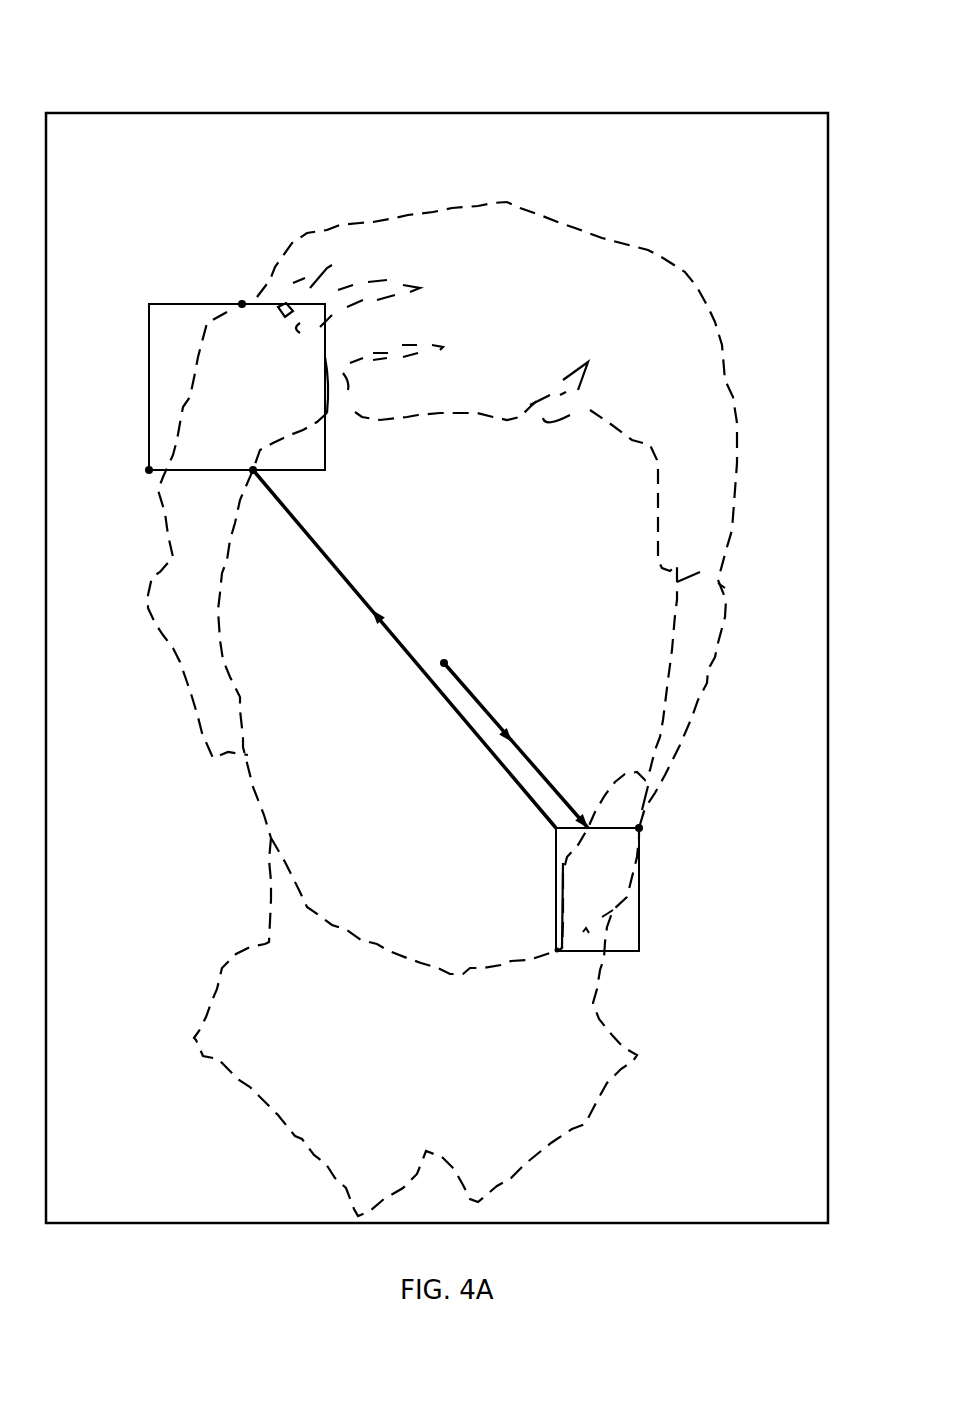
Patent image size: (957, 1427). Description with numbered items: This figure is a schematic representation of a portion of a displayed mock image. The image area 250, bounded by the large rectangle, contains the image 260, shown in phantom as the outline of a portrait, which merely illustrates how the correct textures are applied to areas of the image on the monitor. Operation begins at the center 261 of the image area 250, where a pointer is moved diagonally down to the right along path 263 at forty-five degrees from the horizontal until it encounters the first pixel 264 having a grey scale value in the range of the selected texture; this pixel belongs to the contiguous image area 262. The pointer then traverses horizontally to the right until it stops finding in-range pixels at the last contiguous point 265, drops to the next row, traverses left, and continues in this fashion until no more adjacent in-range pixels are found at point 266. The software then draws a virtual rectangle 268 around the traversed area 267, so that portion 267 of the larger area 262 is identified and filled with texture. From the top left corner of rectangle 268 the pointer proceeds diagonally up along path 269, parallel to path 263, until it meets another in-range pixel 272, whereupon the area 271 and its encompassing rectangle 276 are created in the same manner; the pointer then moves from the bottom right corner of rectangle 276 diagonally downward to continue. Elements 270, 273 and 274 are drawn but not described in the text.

The image area 250 is at (503, 93).
The image 260 is at (648, 252).
The center of image area 261 is at (444, 663).
The contiguous image area 262 is at (643, 792).
The path 263 is at (492, 715).
The first pixel 264 is at (590, 827).
The last contiguous point 265 is at (640, 828).
The end point 266 is at (557, 952).
The traversed area 267 is at (572, 880).
The virtual rectangle 268 is at (640, 907).
The path 269 is at (352, 582).
The arm outline 270 is at (220, 573).
The area 271 is at (200, 408).
The pixel 272 is at (253, 470).
The corner point 273 is at (149, 470).
The top point 274 is at (242, 304).
The encompassing rectangle 276 is at (149, 343).